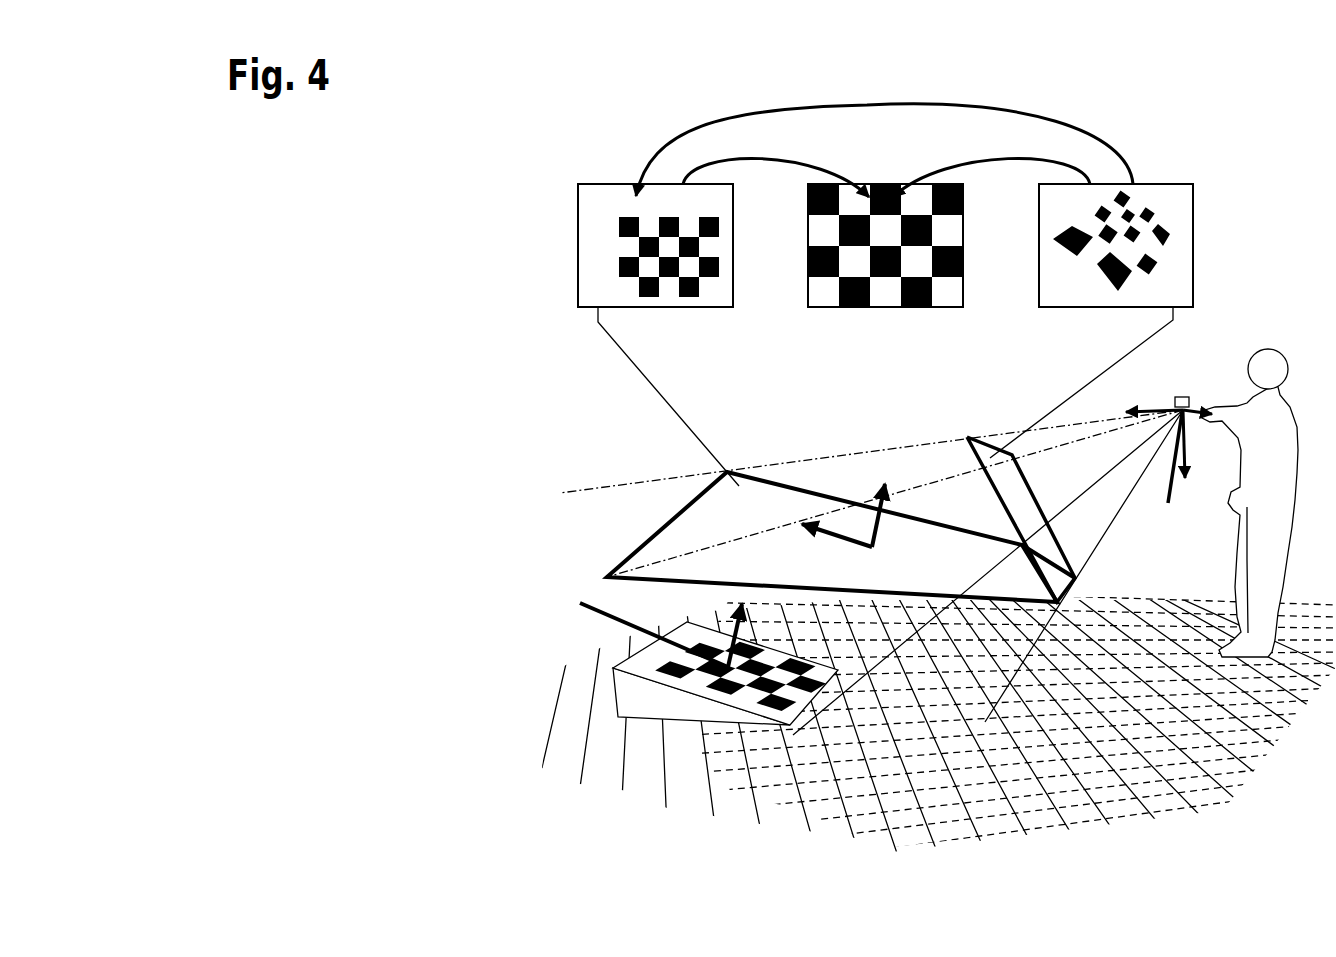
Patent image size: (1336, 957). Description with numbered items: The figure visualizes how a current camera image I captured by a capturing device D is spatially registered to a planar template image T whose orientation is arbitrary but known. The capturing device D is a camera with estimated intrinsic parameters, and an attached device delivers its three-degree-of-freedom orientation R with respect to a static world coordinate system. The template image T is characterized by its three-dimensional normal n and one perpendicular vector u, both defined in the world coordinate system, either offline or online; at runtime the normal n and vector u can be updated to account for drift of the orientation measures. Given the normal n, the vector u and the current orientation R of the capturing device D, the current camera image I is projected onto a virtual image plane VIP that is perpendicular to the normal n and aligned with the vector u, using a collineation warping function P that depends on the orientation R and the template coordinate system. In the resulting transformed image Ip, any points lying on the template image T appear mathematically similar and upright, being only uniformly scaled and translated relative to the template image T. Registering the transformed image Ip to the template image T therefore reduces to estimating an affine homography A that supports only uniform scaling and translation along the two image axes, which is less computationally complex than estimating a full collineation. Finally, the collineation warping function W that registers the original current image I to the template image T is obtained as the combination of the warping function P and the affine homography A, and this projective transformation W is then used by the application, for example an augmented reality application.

The transformed image Ip is at (658, 335).
The template image T is at (448, 593).
The current camera image I is at (1091, 321).
The collineation warping function P is at (884, 133).
The affine homography A is at (776, 164).
The collineation warping function W is at (991, 163).
The virtual image plane VIP is at (683, 507).
The perpendicular vector u is at (810, 505).
The normal n is at (898, 470).
The capturing device D is at (1212, 378).
The orientation R is at (1170, 478).